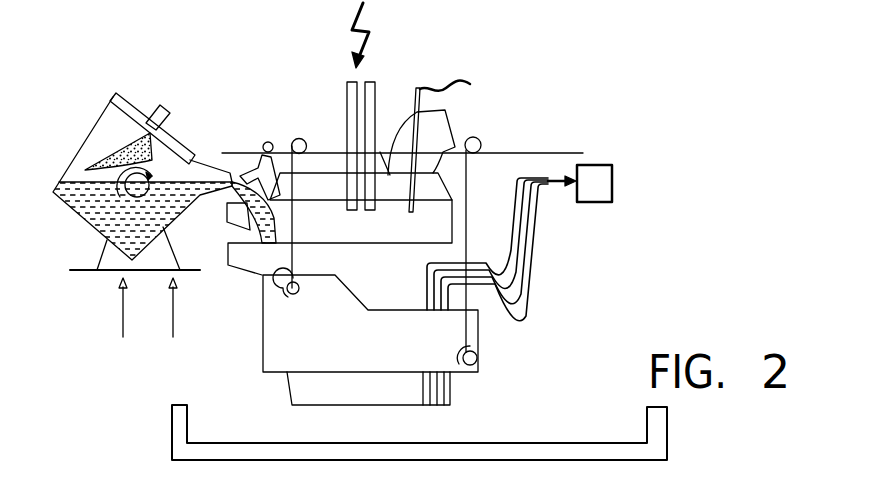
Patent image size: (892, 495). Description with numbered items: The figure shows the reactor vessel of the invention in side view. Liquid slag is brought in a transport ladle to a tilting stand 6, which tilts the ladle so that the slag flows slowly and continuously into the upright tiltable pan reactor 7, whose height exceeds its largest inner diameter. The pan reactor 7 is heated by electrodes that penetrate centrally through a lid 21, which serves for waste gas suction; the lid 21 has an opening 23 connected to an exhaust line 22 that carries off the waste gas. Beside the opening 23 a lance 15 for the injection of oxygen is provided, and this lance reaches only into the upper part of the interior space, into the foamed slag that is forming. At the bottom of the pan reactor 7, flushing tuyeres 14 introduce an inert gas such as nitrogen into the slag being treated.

The tilting stand 6 is at (118, 260).
The tiltable pan reactor 7 is at (445, 218).
The flushing tuyeres 14 is at (427, 410).
The lance 15 is at (420, 88).
The lid 21 is at (338, 182).
The exhaust line 22 is at (442, 133).
The opening 23 is at (437, 172).